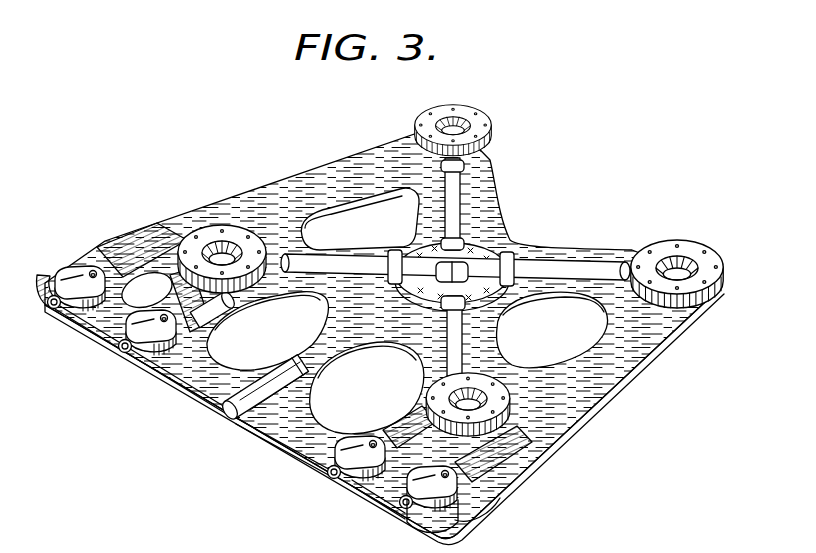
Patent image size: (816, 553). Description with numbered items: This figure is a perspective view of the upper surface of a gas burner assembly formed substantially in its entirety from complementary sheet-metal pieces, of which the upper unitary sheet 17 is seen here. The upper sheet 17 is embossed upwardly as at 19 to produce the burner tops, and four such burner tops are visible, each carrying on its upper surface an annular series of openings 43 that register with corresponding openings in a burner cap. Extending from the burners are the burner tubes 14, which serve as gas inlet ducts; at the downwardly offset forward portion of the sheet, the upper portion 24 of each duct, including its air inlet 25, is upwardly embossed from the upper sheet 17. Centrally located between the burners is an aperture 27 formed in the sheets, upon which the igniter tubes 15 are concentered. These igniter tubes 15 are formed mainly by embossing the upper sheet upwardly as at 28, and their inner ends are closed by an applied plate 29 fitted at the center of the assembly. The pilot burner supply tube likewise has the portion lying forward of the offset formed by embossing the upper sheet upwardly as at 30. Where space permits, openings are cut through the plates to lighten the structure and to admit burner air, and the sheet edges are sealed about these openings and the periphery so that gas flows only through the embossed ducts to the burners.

The burner tube 14 is at (115, 258).
The igniter tube 15 is at (349, 262).
The upper unitary sheet 17 is at (552, 393).
The upward embossing of upper sheet 19 is at (222, 245).
The upper portion of duct 24 is at (132, 242).
The air inlet 25 is at (92, 302).
The aperture 27 is at (425, 283).
The upward embossing for igniter tubes 28 is at (455, 187).
The applied plate 29 is at (493, 250).
The upward embossing for pilot tube 30 is at (280, 405).
The annular series of openings 43 is at (195, 233).